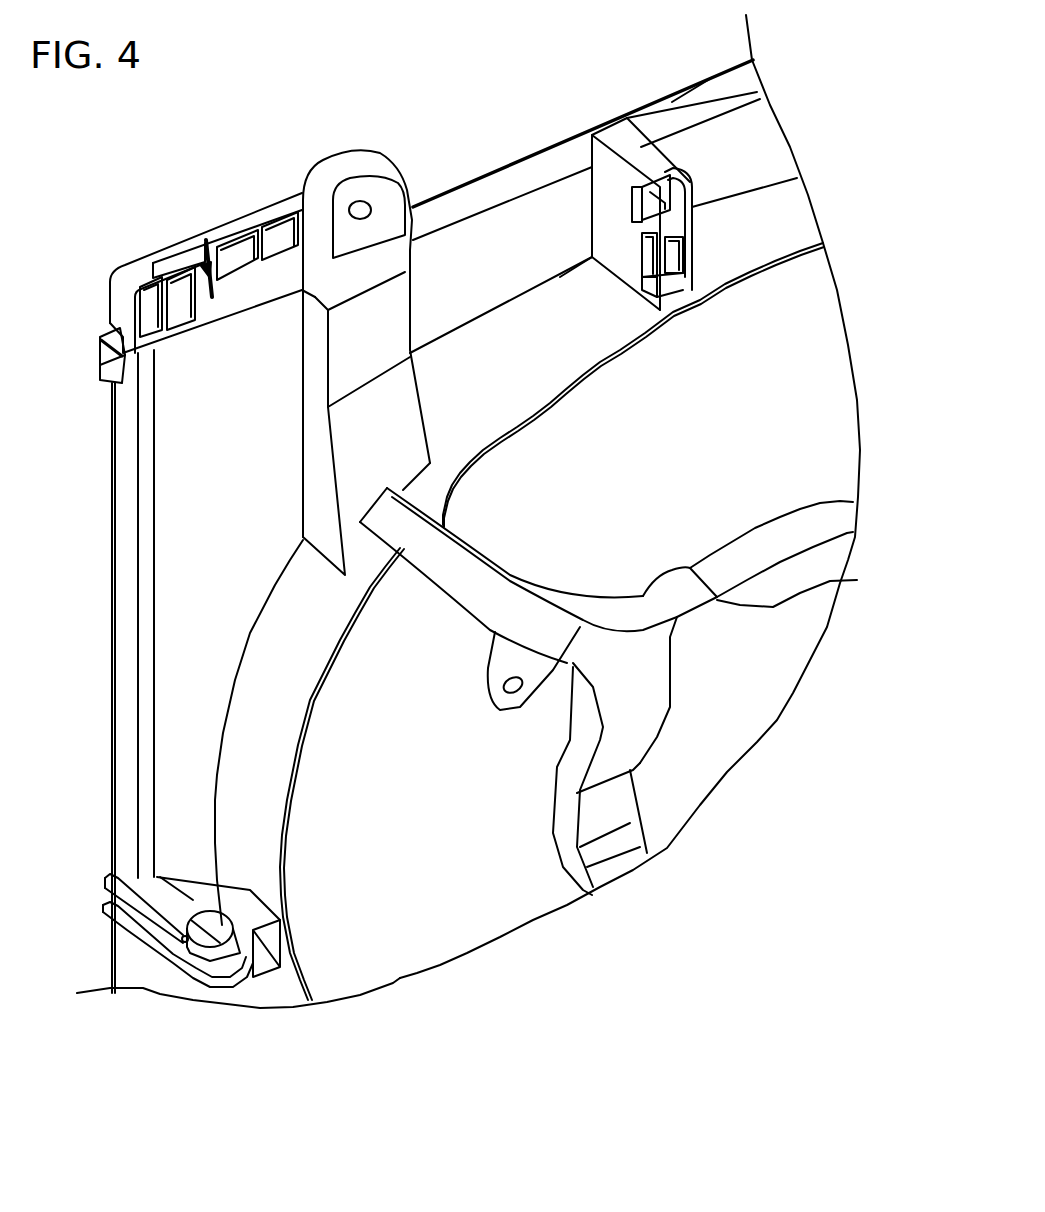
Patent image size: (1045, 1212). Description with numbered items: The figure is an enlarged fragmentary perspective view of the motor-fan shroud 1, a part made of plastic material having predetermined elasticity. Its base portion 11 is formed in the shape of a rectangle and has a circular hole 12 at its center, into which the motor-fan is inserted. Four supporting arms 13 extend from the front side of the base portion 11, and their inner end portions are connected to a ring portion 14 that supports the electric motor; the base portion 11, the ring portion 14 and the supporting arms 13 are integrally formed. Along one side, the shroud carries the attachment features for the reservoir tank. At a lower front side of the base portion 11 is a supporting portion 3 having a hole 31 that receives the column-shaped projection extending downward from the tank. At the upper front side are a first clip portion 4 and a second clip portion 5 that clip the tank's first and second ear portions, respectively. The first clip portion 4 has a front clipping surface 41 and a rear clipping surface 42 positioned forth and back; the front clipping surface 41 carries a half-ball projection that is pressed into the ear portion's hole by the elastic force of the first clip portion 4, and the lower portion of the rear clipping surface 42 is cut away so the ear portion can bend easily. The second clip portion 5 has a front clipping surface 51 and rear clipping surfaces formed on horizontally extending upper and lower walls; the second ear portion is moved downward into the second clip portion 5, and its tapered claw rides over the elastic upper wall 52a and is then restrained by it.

The motor-fan shroud 1 is at (170, 690).
The base portion 11 is at (170, 529).
The circular hole 12 is at (773, 265).
The supporting arms 13 is at (507, 600).
The ring portion 14 is at (573, 763).
The supporting portion 3 is at (240, 971).
The hole 31 is at (217, 927).
The first clip portion 4 is at (236, 355).
The front clipping surface 41 is at (170, 310).
The rear clipping surface 42 is at (172, 263).
The second clip portion 5 is at (665, 159).
The front clipping surface 51 is at (643, 230).
The upper wall 52a is at (657, 168).